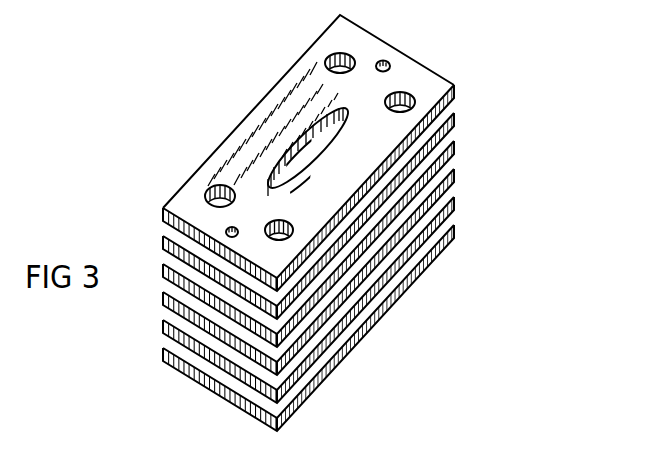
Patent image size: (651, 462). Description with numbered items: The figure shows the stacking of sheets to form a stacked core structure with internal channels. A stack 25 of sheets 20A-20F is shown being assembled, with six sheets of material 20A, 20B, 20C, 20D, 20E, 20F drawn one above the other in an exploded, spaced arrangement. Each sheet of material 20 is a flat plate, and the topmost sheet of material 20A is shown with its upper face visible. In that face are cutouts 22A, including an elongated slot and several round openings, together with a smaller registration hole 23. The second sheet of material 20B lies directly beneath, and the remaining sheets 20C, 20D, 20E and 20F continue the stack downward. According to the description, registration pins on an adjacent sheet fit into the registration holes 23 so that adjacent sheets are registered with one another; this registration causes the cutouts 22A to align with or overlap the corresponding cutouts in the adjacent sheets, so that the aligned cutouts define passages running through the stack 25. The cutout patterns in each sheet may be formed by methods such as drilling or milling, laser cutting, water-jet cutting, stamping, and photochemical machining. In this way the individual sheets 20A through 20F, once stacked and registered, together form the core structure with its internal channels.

The sheet of material 20 is at (252, 130).
The sheet of material 20A is at (324, 153).
The second sheet of material 20B is at (456, 121).
The sheet of material 20C is at (456, 149).
The sheet of material 20D is at (456, 177).
The sheet of material 20E is at (456, 205).
The sheet of material 20F is at (456, 233).
The cutout 22A is at (221, 199).
The registration hole 23 is at (384, 60).
The stack 25 is at (324, 223).